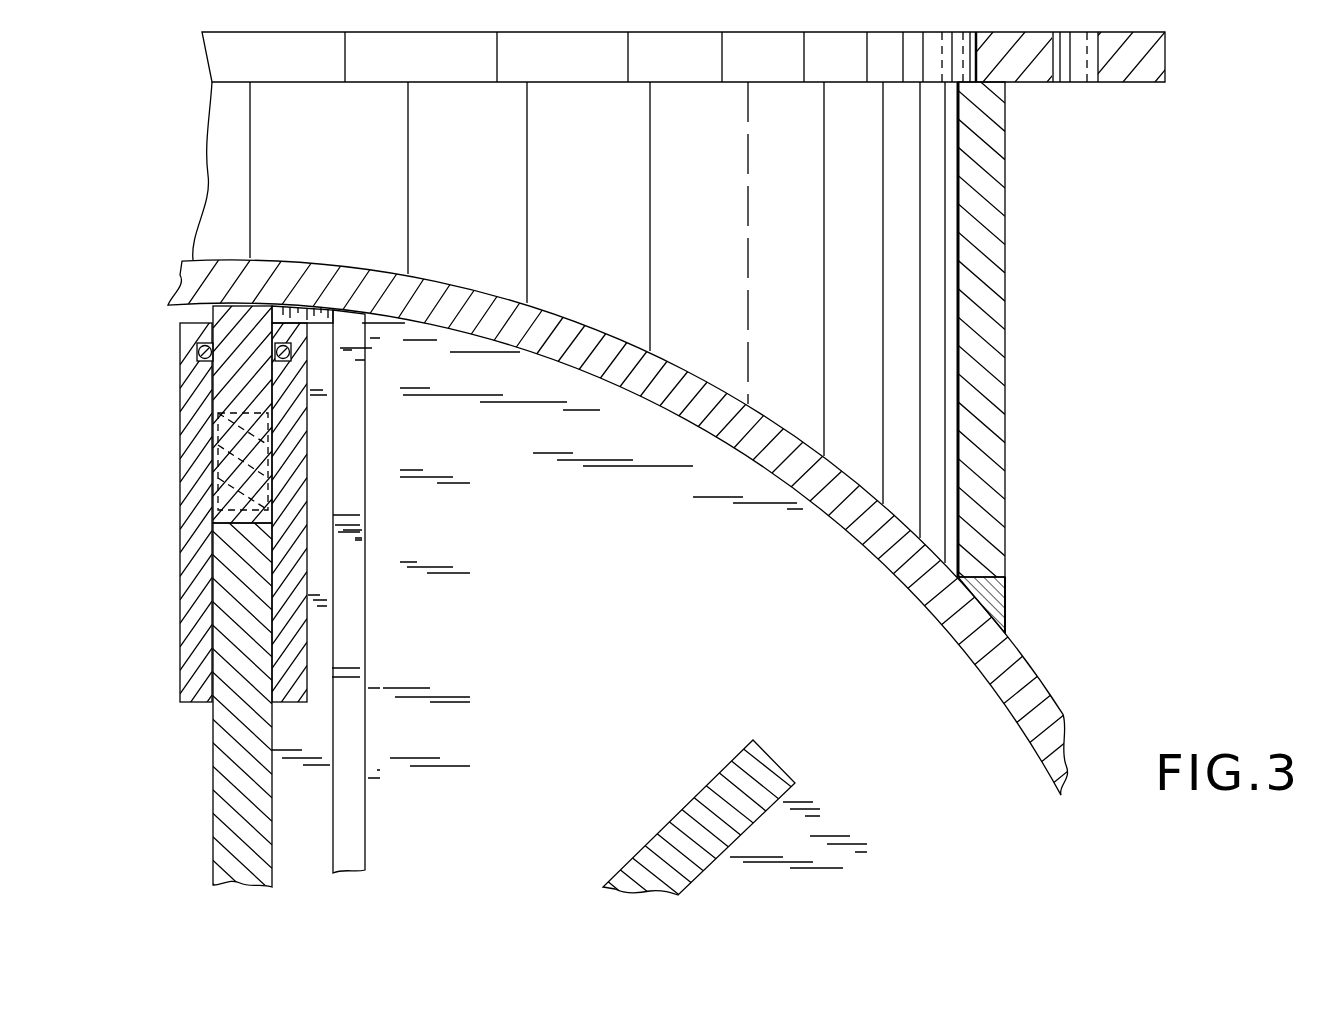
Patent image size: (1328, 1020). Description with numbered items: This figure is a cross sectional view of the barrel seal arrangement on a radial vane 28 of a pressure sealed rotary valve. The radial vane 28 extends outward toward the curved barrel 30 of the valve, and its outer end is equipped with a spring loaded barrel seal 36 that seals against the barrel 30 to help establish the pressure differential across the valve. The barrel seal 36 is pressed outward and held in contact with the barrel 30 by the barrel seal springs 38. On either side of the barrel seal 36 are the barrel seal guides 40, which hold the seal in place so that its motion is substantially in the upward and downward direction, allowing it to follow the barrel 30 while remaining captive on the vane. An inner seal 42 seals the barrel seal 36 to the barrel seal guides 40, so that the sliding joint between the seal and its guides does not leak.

The radial vane 28 is at (230, 724).
The barrel 30 is at (705, 428).
The barrel seal 36 is at (273, 312).
The barrel seal springs 38 is at (275, 468).
The barrel seal guides 40 is at (300, 578).
The inner seal 42 is at (337, 325).